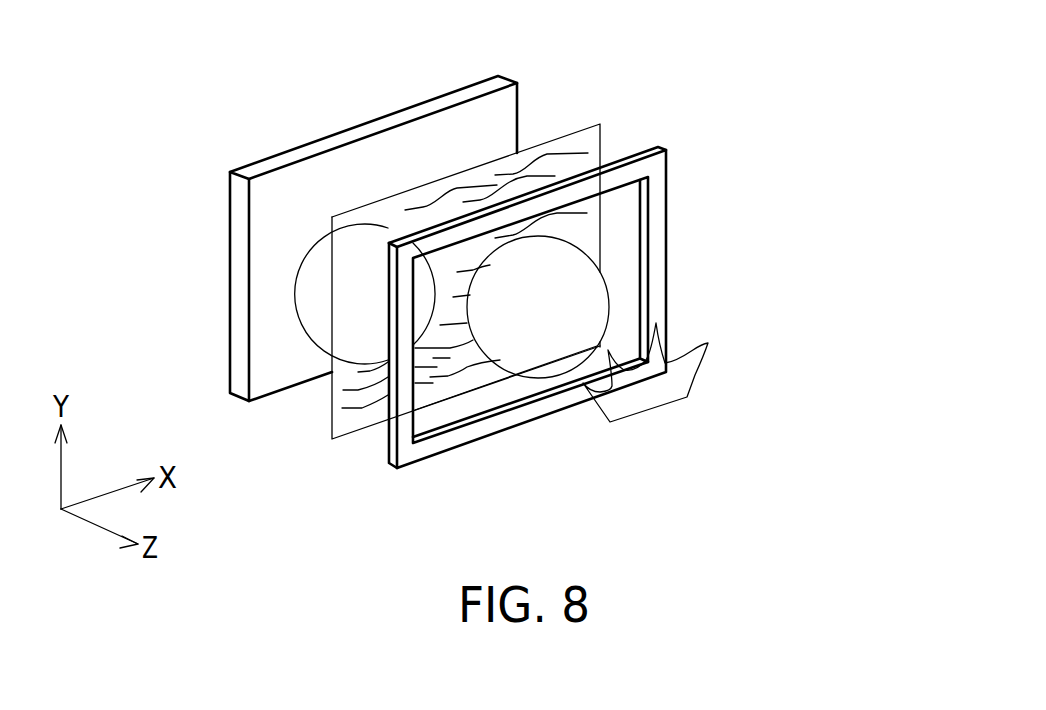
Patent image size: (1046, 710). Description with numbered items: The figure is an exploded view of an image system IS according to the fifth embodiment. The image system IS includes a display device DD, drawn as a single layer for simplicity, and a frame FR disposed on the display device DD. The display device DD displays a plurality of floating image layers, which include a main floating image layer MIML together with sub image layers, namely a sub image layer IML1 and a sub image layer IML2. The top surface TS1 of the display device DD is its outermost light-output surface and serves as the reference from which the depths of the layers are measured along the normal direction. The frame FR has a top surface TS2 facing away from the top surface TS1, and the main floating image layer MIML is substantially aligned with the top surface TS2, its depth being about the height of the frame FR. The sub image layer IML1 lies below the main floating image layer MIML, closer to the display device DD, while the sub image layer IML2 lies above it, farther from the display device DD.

The image system IS is at (147, 80).
The display device DD is at (517, 100).
The top surface of the display device TS1 is at (283, 183).
The sub image layer IML1 is at (592, 140).
The frame FR is at (657, 168).
The top surface of the frame TS2 is at (488, 430).
The main floating image layer MIML is at (580, 302).
The sub image layer IML2 is at (692, 364).